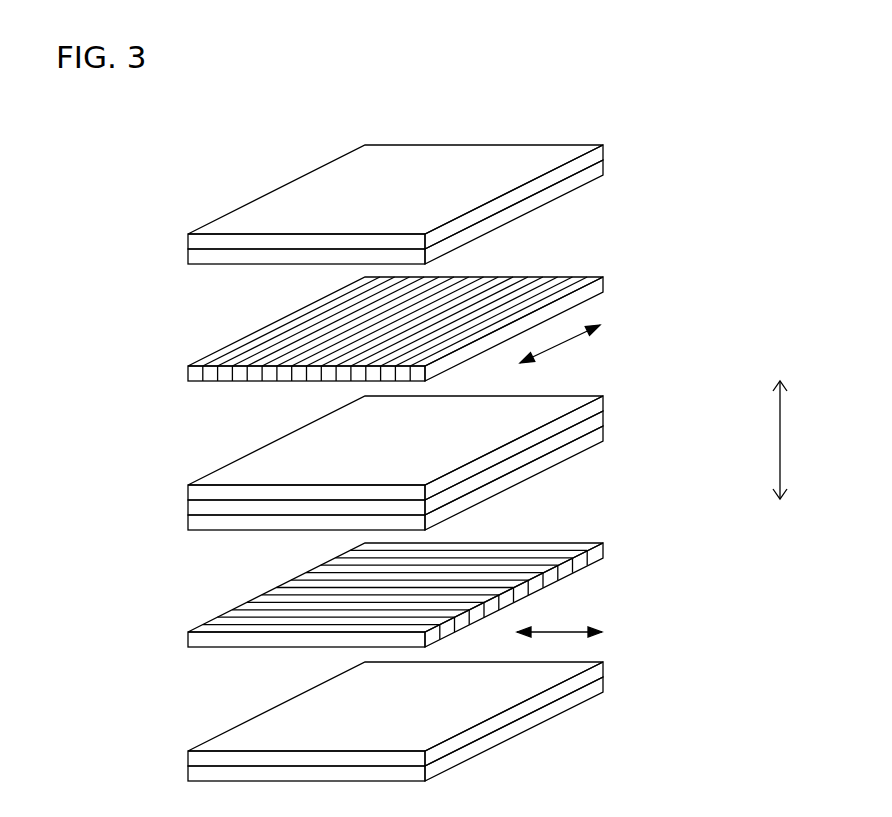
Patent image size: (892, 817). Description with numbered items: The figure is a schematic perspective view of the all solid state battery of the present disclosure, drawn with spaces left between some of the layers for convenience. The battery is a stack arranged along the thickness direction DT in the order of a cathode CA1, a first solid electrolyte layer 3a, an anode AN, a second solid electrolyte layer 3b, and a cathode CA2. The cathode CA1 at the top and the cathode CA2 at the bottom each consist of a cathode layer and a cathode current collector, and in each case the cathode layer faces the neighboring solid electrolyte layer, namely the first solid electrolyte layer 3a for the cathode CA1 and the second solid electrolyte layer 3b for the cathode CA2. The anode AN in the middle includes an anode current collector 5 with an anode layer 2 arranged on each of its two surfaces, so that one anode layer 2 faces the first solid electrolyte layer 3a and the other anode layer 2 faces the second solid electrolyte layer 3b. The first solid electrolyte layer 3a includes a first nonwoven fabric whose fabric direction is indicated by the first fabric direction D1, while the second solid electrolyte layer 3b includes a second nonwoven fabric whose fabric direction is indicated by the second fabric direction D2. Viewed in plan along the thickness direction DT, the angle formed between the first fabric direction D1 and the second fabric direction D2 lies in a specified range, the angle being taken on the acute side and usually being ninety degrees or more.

The cathode CA1 is at (457, 197).
The cathode CA2 is at (457, 714).
The first solid electrolyte layer 3a is at (603, 284).
The second solid electrolyte layer 3b is at (603, 551).
The anode layer 2 is at (603, 402).
The anode current collector 5 is at (603, 416).
The anode AN is at (452, 456).
The first fabric direction D1 is at (560, 348).
The second fabric direction D2 is at (575, 633).
The thickness direction DT is at (792, 440).